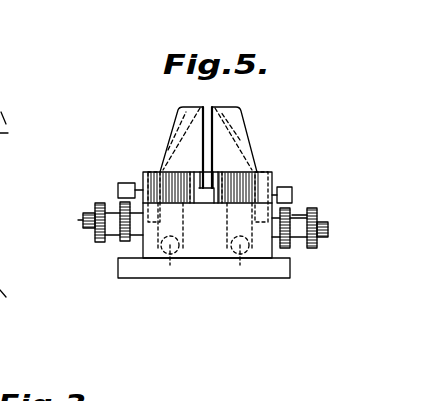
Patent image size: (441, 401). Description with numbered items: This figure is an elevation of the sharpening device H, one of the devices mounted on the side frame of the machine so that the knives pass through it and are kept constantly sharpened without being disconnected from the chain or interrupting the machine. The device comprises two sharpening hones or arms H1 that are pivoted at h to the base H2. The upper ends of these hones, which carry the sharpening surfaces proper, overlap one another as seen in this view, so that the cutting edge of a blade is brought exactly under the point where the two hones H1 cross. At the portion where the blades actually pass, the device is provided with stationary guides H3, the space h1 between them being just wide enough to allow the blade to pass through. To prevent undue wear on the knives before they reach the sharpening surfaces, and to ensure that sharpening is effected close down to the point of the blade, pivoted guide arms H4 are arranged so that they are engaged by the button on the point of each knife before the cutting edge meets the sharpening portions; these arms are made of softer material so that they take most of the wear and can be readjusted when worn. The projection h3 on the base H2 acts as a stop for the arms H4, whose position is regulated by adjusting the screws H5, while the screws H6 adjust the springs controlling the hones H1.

The sharpening device H is at (227, 199).
The sharpening hones H1 is at (195, 145).
The base H2 is at (210, 267).
The stationary guides H3 is at (182, 122).
The pivoted guide arms H4 is at (143, 174).
The adjusting screws H5 is at (117, 193).
The spring adjusting screws H6 is at (85, 218).
The pivot h is at (165, 262).
The space h1 is at (203, 144).
The projection h3 is at (205, 190).